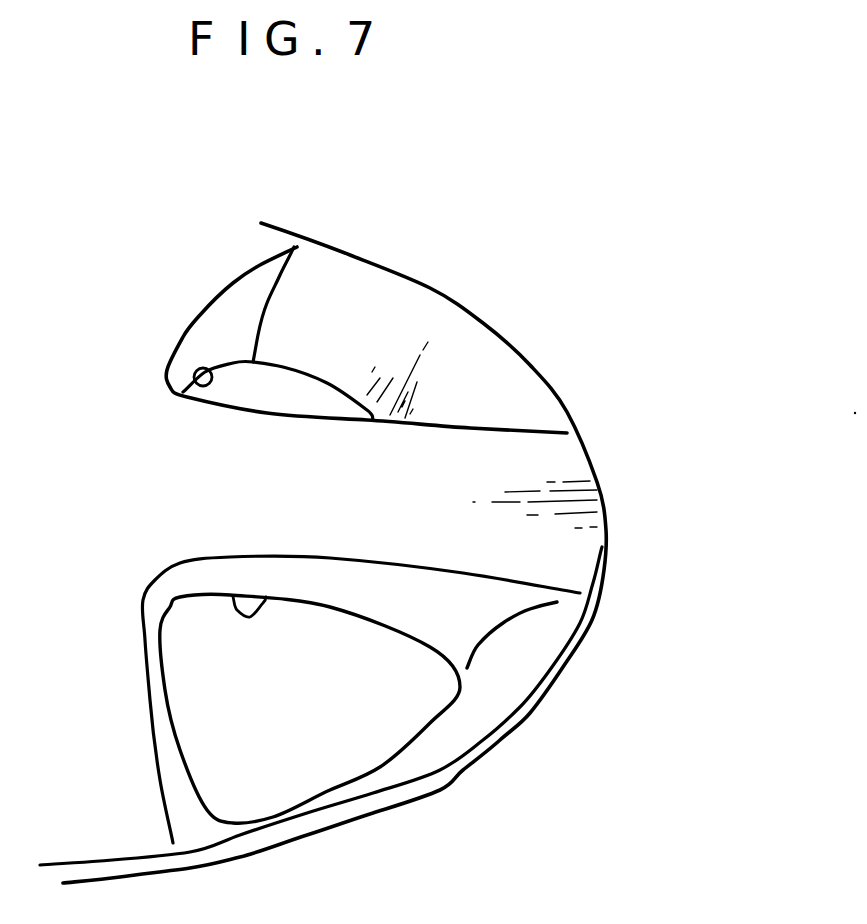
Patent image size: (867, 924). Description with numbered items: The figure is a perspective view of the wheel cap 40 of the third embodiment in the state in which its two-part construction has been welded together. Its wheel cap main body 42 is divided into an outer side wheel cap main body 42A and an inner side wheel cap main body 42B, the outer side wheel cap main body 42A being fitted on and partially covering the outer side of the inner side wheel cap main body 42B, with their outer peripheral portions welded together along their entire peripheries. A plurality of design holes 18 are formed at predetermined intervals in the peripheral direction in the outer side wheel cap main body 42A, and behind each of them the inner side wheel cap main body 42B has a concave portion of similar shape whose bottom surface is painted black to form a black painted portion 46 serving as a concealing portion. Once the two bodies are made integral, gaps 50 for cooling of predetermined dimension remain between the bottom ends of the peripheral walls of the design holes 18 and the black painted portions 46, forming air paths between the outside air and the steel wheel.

The design hole 18 is at (233, 375).
The wheel cap 40 is at (550, 303).
The wheel cap main body 42 is at (403, 706).
The outer side wheel cap main body 42A is at (513, 665).
The inner side wheel cap main body 42B is at (523, 720).
The black painted portion 46 is at (282, 385).
The gap 50 is at (207, 370).